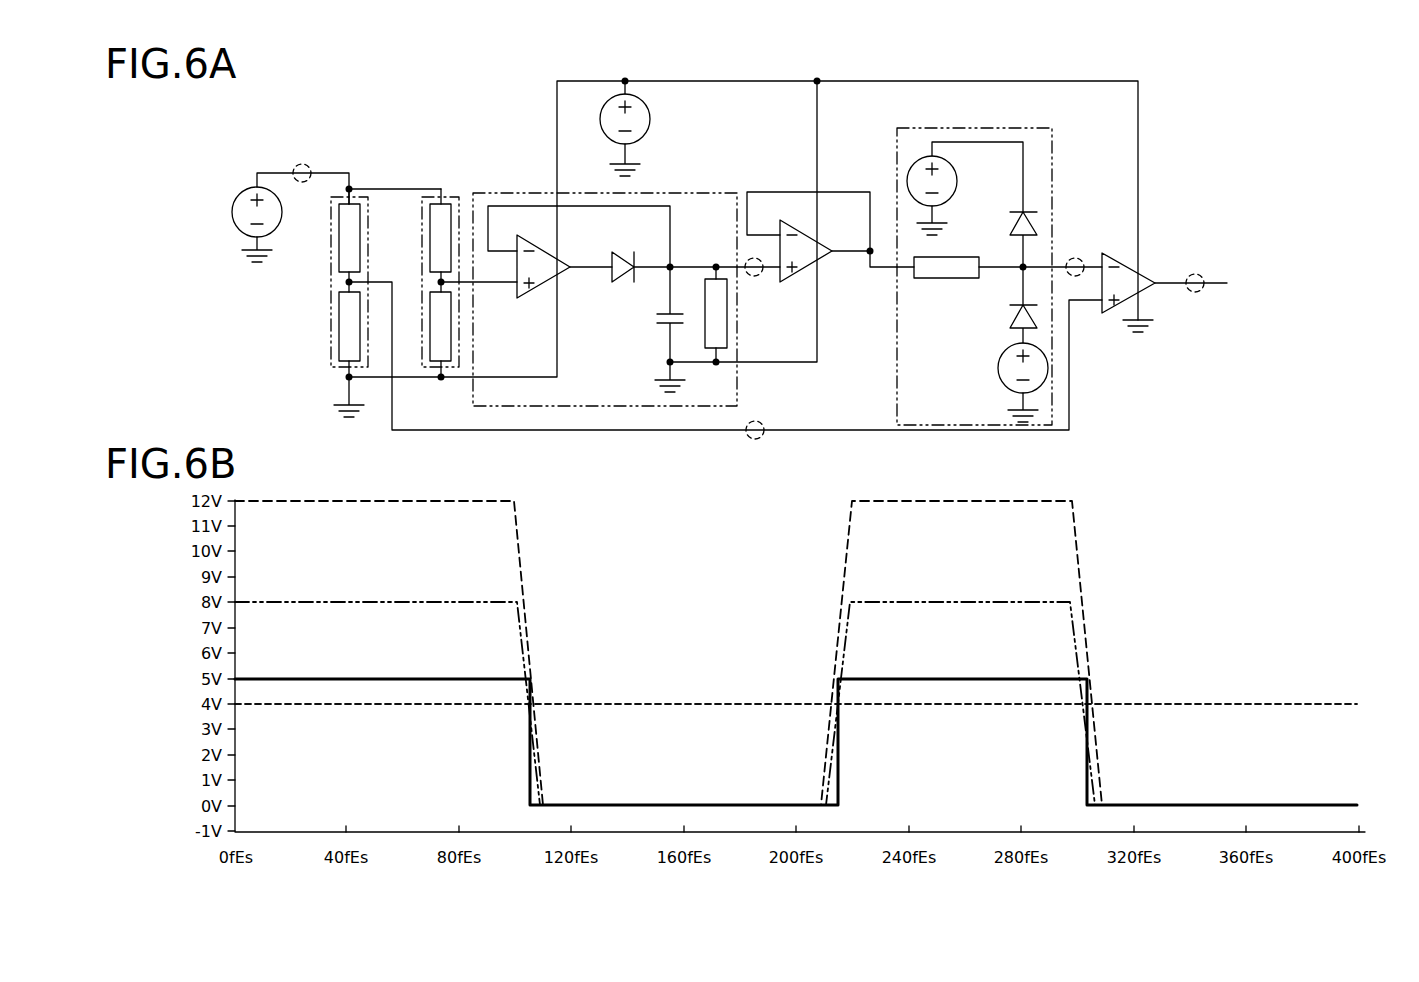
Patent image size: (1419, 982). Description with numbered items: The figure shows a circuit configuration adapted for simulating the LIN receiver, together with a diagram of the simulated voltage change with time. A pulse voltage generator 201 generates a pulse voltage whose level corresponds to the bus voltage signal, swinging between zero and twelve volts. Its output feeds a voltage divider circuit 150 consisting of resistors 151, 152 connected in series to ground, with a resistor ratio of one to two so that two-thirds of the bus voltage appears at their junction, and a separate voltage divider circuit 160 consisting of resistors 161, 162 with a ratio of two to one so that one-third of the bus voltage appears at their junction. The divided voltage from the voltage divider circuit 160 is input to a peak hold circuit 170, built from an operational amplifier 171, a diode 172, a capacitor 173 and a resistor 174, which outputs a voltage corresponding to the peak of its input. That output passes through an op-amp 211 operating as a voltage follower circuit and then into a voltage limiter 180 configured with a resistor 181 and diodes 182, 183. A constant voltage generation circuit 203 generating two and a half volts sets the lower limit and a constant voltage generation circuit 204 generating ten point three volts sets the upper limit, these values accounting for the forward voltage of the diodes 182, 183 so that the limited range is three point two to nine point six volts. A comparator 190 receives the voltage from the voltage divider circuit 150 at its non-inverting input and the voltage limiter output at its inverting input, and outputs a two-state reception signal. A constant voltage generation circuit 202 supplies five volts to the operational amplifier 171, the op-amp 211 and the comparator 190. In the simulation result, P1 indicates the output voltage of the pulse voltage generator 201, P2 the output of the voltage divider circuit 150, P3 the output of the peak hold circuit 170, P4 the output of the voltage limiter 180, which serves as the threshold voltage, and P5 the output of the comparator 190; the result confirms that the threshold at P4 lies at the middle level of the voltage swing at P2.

In FIG. 6A, the voltage divider circuit 150 is at (331, 300).
In FIG. 6A, the resistor 151 is at (339, 238).
In FIG. 6A, the resistor 152 is at (339, 346).
In FIG. 6A, the voltage divider circuit 160 is at (457, 192).
In FIG. 6A, the resistor 161 is at (430, 240).
In FIG. 6A, the resistor 162 is at (451, 350).
In FIG. 6A, the peak hold circuit 170 is at (697, 192).
In FIG. 6A, the operational amplifier 171 is at (531, 299).
In FIG. 6A, the diode 172 is at (617, 283).
In FIG. 6A, the capacitor 173 is at (659, 322).
In FIG. 6A, the resistor 174 is at (727, 340).
In FIG. 6A, the voltage limiter 180 is at (1054, 173).
In FIG. 6A, the resistor 181 is at (932, 278).
In FIG. 6A, the diode 182 is at (1010, 320).
In FIG. 6A, the diode 183 is at (1010, 227).
In FIG. 6A, the comparator 190 is at (1105, 318).
In FIG. 6A, the pulse voltage generator 201 is at (232, 213).
In FIG. 6A, the constant voltage generation circuit 202 is at (650, 118).
In FIG. 6A, the constant voltage generation circuit 203 is at (998, 369).
In FIG. 6A, the constant voltage generation circuit 204 is at (958, 182).
In FIG. 6A, the op-amp 211 is at (803, 228).
In FIG. 6A, the output voltage of the pulse voltage generator P1 is at (305, 164).
In FIG. 6B, the output voltage of the pulse voltage generator P1 is at (518, 528).
In FIG. 6A, the output voltage of the voltage divider P2 is at (762, 436).
In FIG. 6B, the output voltage of the voltage divider P2 is at (415, 600).
In FIG. 6A, the output voltage of the peak hold circuit P3 is at (753, 277).
In FIG. 6B, the output voltage of the peak hold circuit P3 is at (624, 703).
In FIG. 6A, the output voltage of the voltage limiter P4 is at (1077, 258).
In FIG. 6A, the output voltage of the comparator P5 is at (1193, 273).
In FIG. 6B, the output voltage of the comparator P5 is at (369, 677).